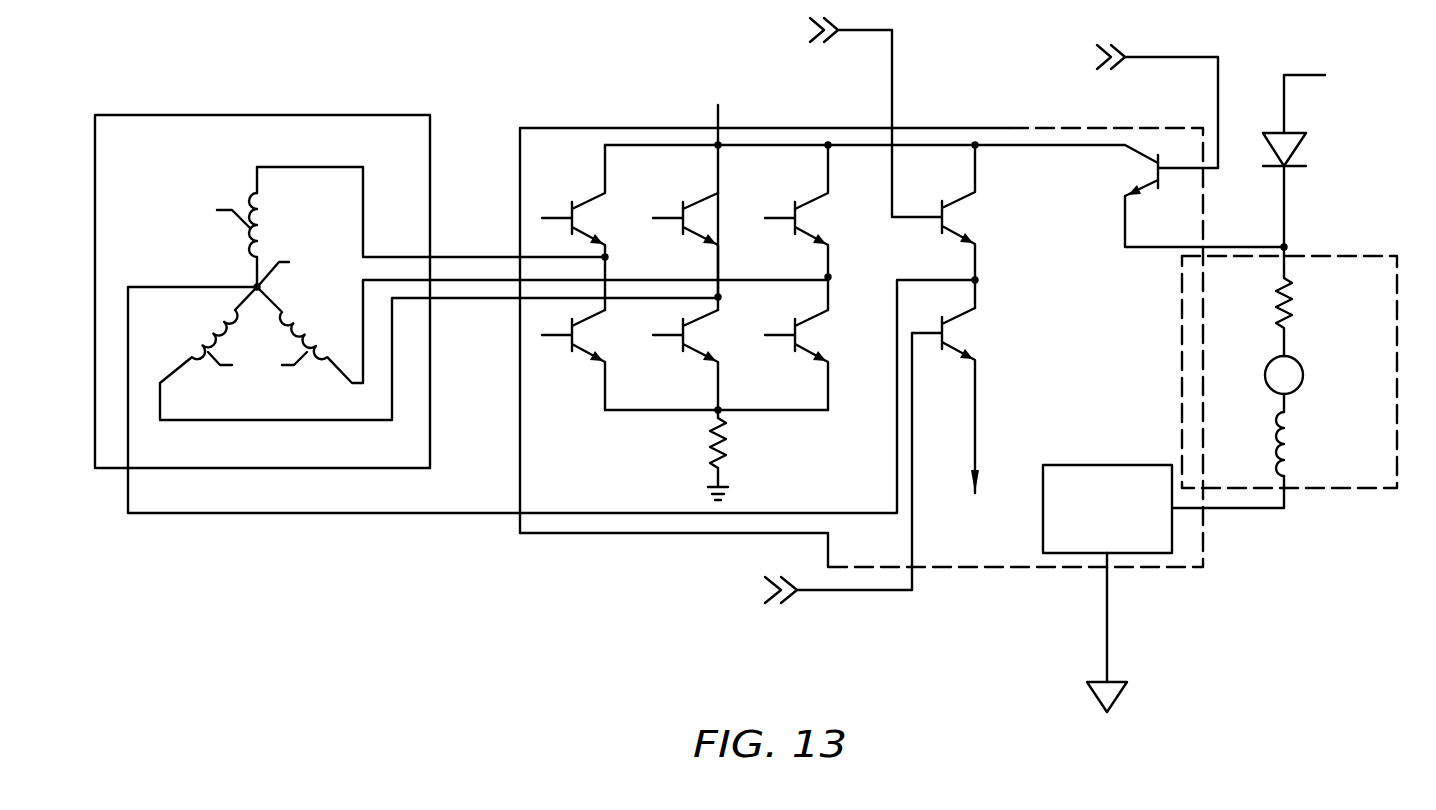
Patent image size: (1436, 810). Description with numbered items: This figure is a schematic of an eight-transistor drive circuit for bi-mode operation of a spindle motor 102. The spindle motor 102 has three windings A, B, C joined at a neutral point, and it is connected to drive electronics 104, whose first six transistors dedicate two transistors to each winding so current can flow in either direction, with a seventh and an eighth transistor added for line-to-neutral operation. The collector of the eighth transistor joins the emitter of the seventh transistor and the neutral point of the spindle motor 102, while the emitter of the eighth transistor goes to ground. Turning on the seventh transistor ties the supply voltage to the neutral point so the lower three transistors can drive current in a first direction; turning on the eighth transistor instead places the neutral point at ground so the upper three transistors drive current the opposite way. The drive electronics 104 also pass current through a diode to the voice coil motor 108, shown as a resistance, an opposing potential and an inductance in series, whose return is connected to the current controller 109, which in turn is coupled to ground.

The spindle motor 102 is at (126, 110).
The drive electronics 104 is at (553, 75).
The voice coil motor 108 is at (1351, 256).
The current controller 109 is at (1173, 523).